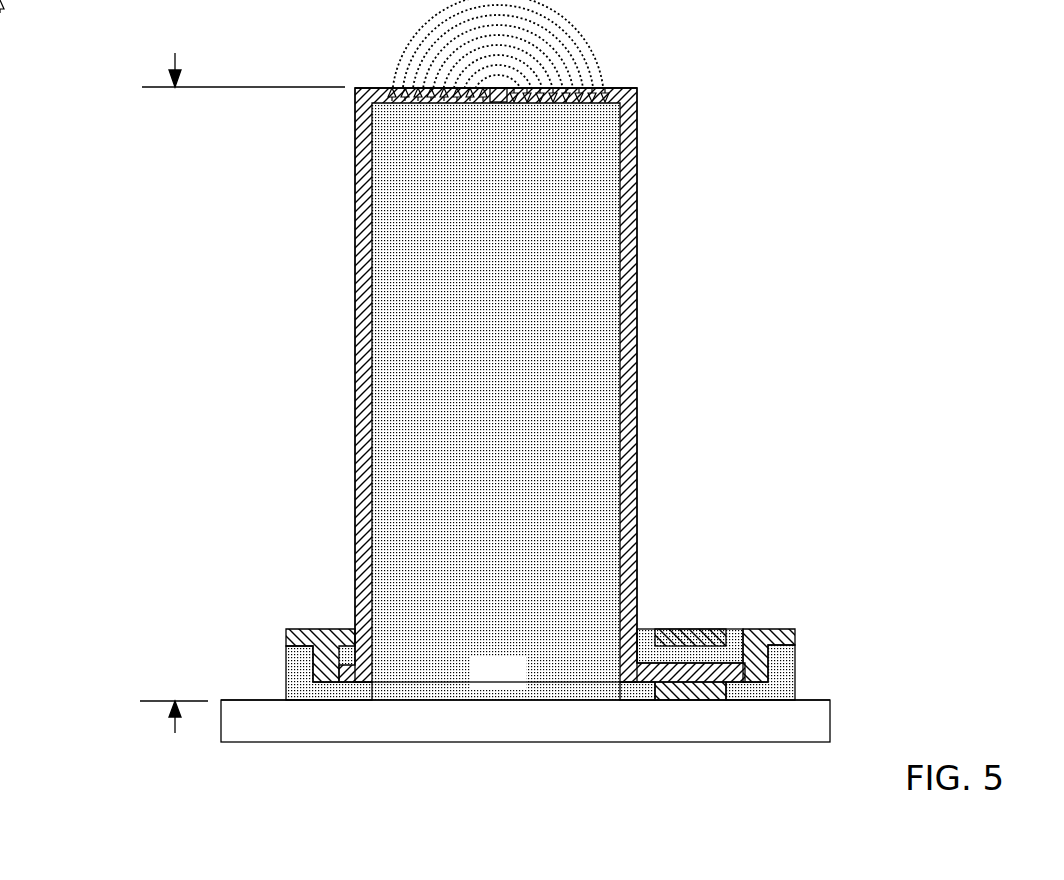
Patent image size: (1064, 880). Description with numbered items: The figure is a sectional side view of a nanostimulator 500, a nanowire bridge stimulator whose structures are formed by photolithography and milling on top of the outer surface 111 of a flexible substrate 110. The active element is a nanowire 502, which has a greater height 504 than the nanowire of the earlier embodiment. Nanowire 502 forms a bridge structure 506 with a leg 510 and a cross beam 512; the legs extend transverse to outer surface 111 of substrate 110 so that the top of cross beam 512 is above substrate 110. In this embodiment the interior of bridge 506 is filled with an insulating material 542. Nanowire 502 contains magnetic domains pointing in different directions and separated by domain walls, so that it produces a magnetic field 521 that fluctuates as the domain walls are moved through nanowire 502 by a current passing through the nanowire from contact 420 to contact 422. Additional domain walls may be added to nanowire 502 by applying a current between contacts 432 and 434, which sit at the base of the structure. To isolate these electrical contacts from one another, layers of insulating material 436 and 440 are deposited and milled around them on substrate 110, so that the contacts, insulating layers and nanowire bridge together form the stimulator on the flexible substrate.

The flexible substrate 110 is at (808, 733).
The outer surface 111 is at (240, 699).
The contact 420 is at (797, 640).
The contact 422 is at (292, 628).
The contact 432 is at (668, 628).
The contact 434 is at (683, 700).
The insulating material 436 is at (733, 628).
The insulating material 440 is at (795, 680).
The nanostimulator 500 is at (845, 113).
The nanowire 502 is at (355, 88).
The height 504 is at (175, 60).
The bridge structure 506 is at (647, 196).
The leg 510 is at (637, 375).
The cross beam 512 is at (523, 103).
The magnetic field 521 is at (598, 52).
The insulating material 542 is at (520, 685).